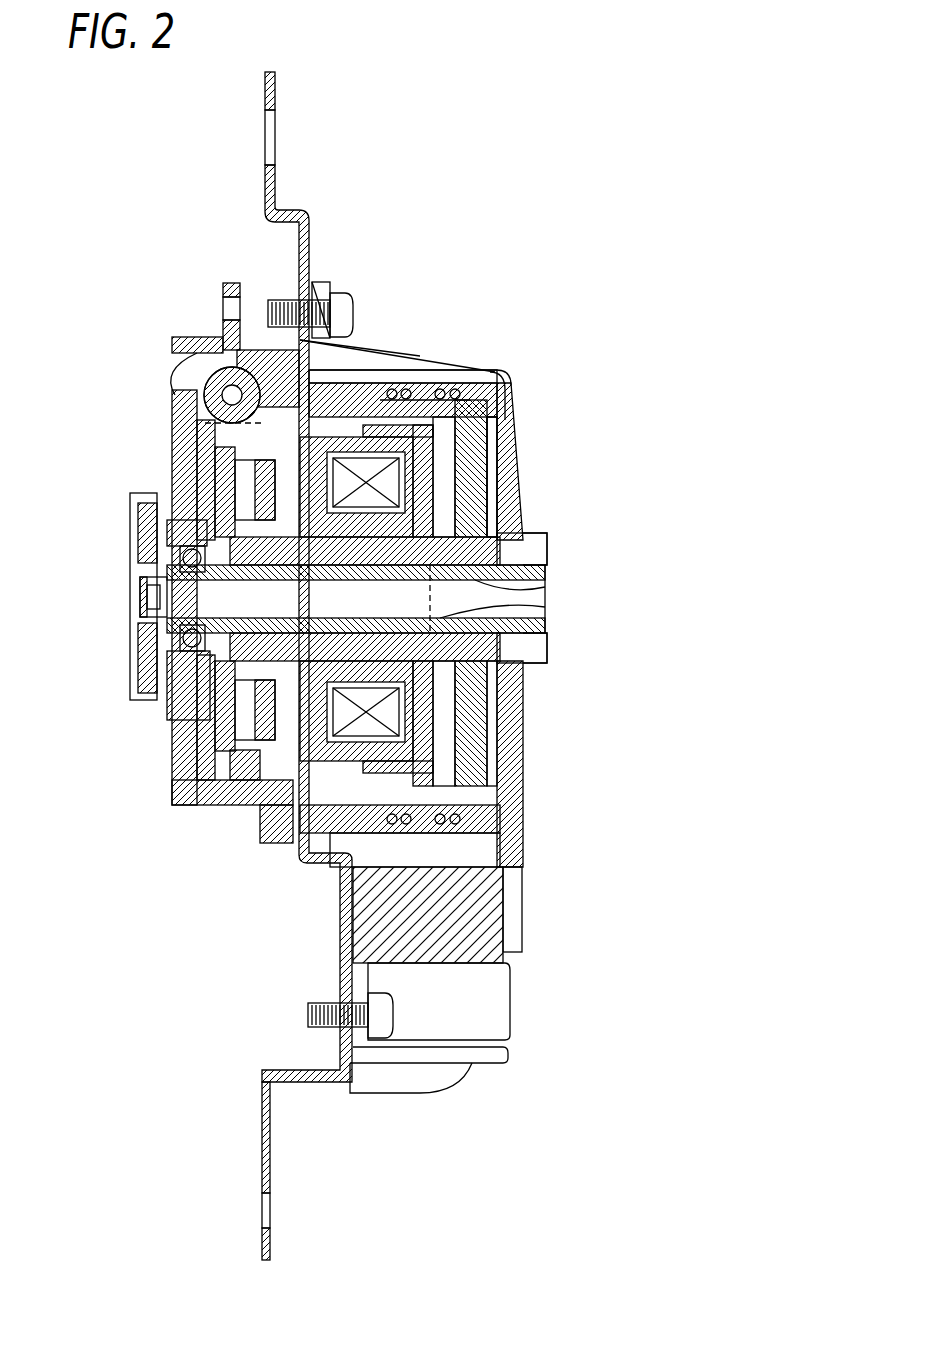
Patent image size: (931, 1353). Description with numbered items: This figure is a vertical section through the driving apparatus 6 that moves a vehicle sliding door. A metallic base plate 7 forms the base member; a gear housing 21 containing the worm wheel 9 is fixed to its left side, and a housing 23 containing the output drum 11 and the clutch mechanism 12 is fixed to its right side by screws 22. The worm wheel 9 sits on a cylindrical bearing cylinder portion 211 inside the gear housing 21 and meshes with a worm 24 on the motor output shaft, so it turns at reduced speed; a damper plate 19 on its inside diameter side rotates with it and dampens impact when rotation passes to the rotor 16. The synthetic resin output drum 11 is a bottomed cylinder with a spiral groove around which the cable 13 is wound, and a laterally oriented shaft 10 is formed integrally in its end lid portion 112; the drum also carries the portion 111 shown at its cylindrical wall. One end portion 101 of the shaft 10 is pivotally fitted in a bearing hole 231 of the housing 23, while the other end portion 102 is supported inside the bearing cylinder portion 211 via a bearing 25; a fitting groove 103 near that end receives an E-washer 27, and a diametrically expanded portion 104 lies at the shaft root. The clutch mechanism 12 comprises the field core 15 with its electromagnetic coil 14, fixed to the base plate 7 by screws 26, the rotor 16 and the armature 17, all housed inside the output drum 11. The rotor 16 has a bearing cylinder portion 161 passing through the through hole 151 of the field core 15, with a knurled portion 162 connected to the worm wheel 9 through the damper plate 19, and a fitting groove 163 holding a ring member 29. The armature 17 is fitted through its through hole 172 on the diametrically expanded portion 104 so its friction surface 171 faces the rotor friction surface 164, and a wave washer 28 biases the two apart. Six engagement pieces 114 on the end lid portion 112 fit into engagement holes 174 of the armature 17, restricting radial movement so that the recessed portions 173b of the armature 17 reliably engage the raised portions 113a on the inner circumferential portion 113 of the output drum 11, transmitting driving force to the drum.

The driving apparatus 6 is at (504, 284).
The base plate 7 is at (340, 975).
The worm wheel 9 is at (197, 455).
The shaft 10 is at (440, 535).
The output drum 11 is at (503, 372).
The clutch mechanism 12 is at (412, 385).
The cable 13 is at (462, 380).
The electromagnetic coil 14 is at (470, 445).
The field core 15 is at (362, 378).
The rotor 16 is at (500, 840).
The armature 17 is at (490, 785).
The damper plate 19 is at (232, 745).
The gear housing 21 is at (172, 730).
The screws 22 is at (350, 306).
The housing 23 is at (518, 425).
The worm 24 is at (205, 378).
The bearing 25 is at (165, 540).
The screws 26 is at (255, 800).
The E-washer 27 is at (160, 520).
The wave washer 28 is at (470, 540).
The ring member 29 is at (232, 470).
The one end portion 101 is at (547, 565).
The another end portion 102 is at (185, 556).
The fitting groove 103 is at (185, 638).
The diametrically expanded portion 104 is at (520, 583).
The coil 111 is at (437, 385).
The end lid portion 112 is at (470, 775).
The inner circumferential portion 113 is at (410, 800).
The raised portions 113a is at (418, 385).
The engagement pieces 114 is at (445, 700).
The through hole 151 is at (455, 650).
The bearing cylinder portion 161 is at (455, 500).
The knurled portion 162 is at (185, 655).
The fitting groove 163 is at (200, 690).
The friction surface 164 is at (450, 672).
The friction surface 171 is at (440, 748).
The through hole 172 is at (500, 605).
The recessed portions 173b is at (498, 403).
The engagement holes 174 is at (435, 735).
The bearing cylinder portion 211 is at (235, 515).
The bearing hole 231 is at (547, 633).